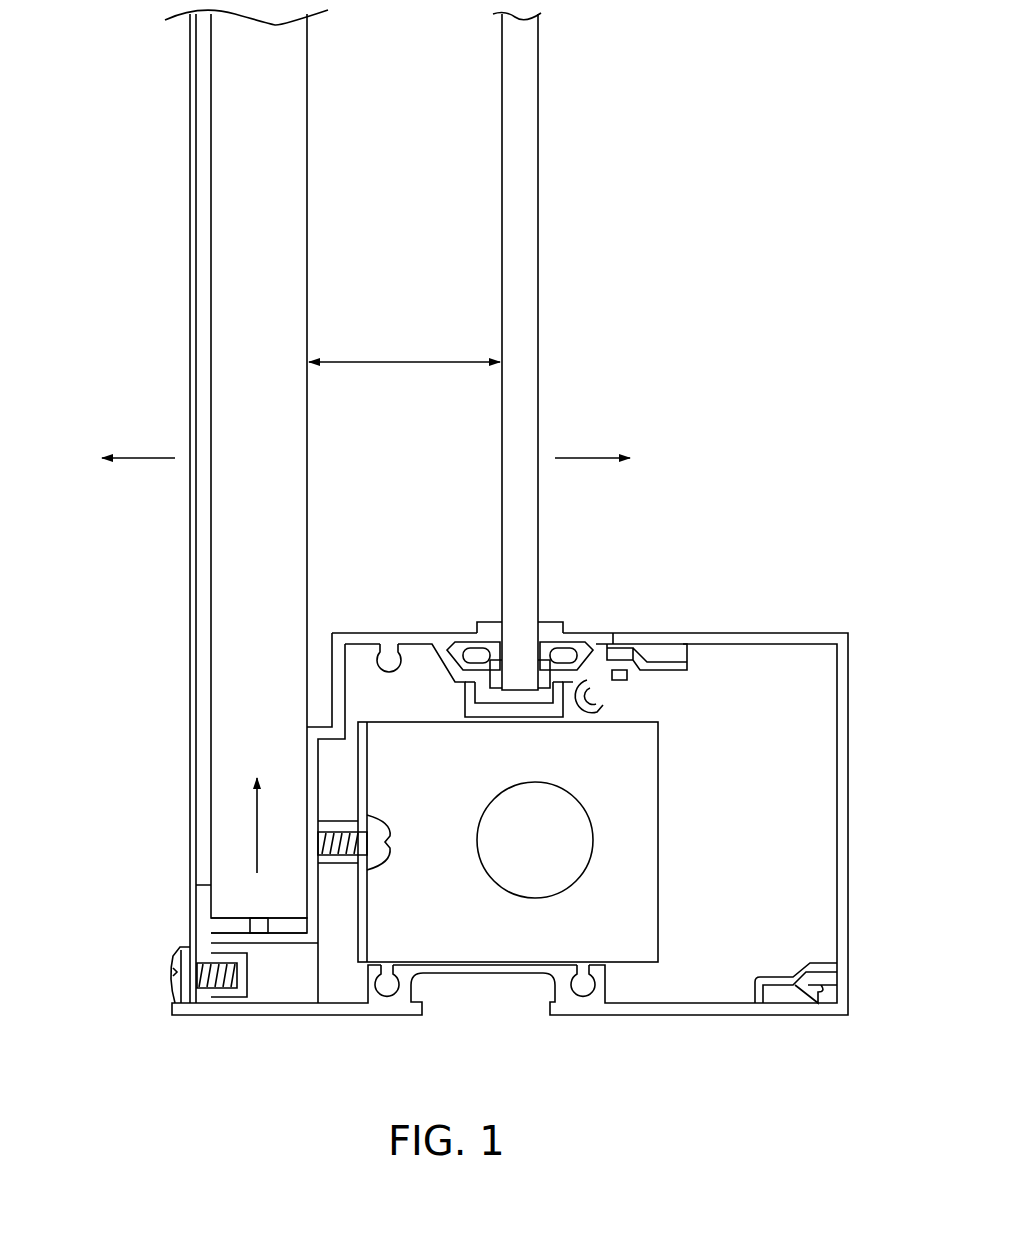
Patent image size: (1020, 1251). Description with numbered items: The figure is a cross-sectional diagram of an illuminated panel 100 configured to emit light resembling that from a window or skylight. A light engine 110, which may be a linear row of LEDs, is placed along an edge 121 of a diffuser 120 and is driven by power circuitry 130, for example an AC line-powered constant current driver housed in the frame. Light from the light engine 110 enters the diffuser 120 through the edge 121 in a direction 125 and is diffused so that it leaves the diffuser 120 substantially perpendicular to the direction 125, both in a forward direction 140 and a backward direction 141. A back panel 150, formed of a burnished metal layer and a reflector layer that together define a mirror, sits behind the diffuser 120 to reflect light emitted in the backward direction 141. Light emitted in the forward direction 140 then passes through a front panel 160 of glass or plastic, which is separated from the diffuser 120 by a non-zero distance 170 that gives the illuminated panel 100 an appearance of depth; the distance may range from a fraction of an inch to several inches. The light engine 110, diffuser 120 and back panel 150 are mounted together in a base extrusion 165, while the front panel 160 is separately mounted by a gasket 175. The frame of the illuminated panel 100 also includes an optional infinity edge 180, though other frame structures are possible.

The illuminated panel 100 is at (810, 361).
The light engine 110 is at (246, 925).
The diffuser 120 is at (242, 385).
The edge 121 is at (258, 915).
The direction 125 is at (257, 806).
The power circuitry 130 is at (478, 920).
The forward direction 140 is at (621, 462).
The backward direction 141 is at (106, 462).
The back panel 150 is at (185, 282).
The front panel 160 is at (524, 185).
The base extrusion 165 is at (178, 958).
The non-zero distance 170 is at (403, 357).
The gasket 175 is at (548, 629).
The infinity edge 180 is at (346, 629).